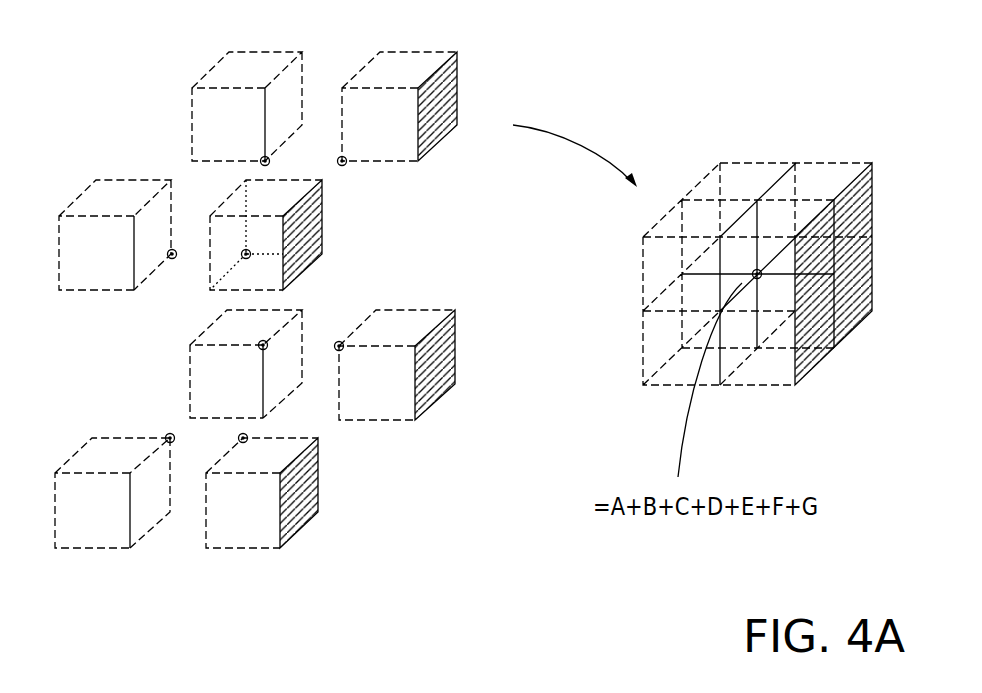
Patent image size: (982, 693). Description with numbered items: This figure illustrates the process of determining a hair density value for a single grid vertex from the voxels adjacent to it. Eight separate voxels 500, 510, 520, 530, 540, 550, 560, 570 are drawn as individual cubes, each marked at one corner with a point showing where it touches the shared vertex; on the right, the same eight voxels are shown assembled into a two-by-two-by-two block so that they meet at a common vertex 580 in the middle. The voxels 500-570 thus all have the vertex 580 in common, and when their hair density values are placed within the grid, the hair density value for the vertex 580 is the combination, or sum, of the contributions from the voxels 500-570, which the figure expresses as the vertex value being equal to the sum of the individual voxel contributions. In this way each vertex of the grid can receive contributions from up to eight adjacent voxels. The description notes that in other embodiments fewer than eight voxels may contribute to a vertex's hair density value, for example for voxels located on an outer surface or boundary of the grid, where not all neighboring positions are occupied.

The voxel 500 is at (135, 178).
The voxel 510 is at (204, 87).
The voxel 520 is at (398, 163).
The voxel 530 is at (325, 235).
The voxel 540 is at (128, 437).
The voxel 550 is at (184, 391).
The voxel 560 is at (395, 421).
The voxel 570 is at (318, 512).
The vertex 580 is at (757, 268).